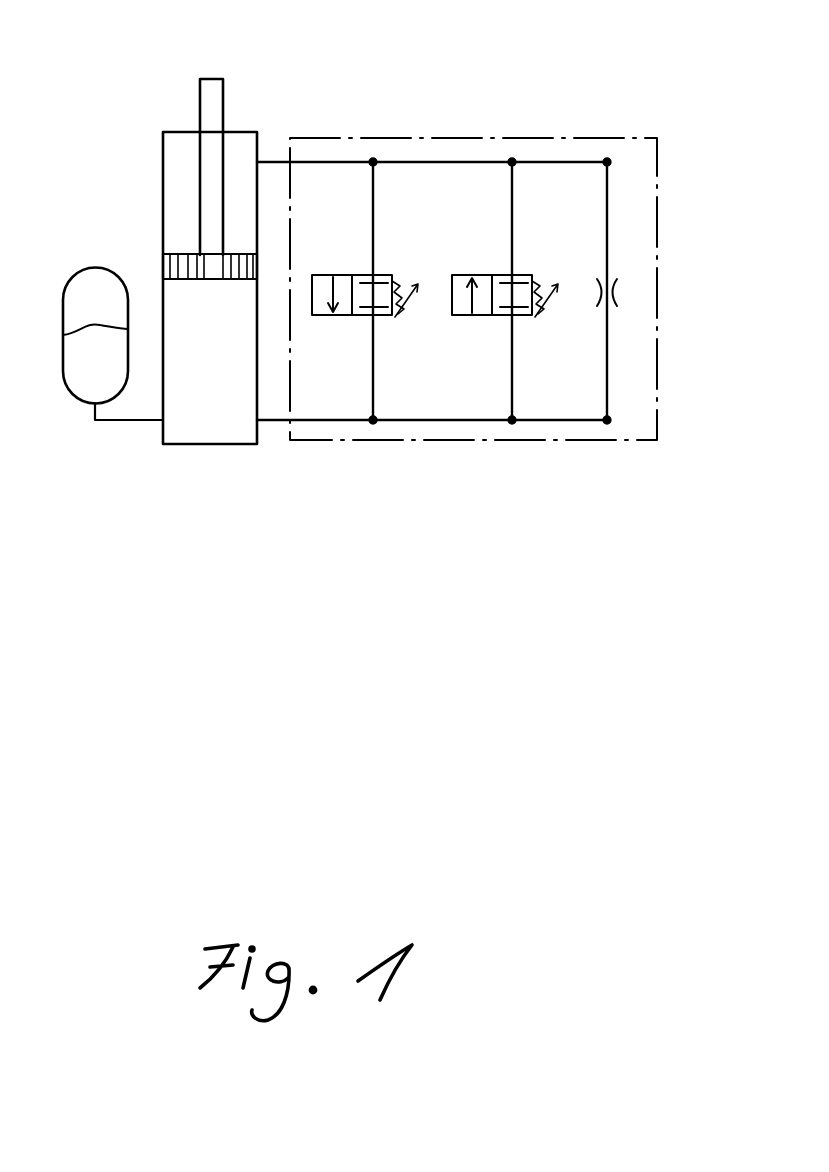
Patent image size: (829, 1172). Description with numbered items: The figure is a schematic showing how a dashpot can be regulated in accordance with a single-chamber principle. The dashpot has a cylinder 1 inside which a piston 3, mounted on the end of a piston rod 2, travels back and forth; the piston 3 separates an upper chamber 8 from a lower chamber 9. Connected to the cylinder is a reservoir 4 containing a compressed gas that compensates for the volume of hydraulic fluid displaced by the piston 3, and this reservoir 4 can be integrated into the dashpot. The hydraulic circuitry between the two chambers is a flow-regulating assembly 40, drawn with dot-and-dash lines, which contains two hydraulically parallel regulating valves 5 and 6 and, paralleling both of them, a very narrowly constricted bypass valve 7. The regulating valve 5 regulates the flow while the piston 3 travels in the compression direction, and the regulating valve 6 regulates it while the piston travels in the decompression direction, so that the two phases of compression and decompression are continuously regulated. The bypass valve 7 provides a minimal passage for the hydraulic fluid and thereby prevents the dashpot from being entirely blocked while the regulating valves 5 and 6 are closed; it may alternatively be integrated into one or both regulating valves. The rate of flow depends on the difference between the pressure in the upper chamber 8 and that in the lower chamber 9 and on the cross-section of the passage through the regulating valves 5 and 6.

The cylinder 1 is at (163, 372).
The piston rod 2 is at (213, 95).
The piston 3 is at (176, 268).
The reservoir 4 is at (85, 370).
The regulating valve 5 is at (523, 280).
The regulating valve 6 is at (385, 289).
The bypass valve 7 is at (621, 295).
The upper chamber 8 is at (240, 158).
The lower chamber 9 is at (228, 413).
The flow-regulating assembly 40 is at (542, 135).